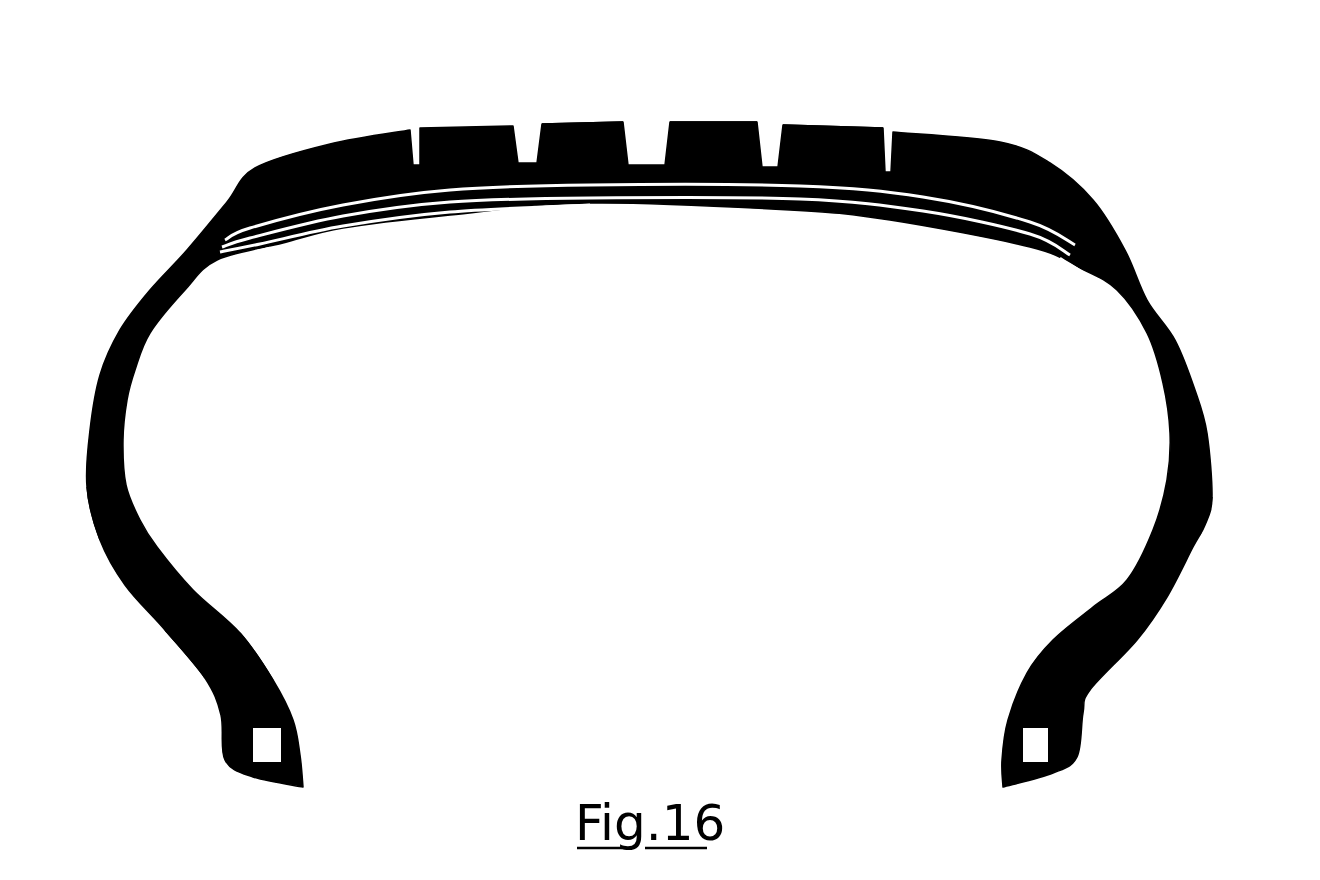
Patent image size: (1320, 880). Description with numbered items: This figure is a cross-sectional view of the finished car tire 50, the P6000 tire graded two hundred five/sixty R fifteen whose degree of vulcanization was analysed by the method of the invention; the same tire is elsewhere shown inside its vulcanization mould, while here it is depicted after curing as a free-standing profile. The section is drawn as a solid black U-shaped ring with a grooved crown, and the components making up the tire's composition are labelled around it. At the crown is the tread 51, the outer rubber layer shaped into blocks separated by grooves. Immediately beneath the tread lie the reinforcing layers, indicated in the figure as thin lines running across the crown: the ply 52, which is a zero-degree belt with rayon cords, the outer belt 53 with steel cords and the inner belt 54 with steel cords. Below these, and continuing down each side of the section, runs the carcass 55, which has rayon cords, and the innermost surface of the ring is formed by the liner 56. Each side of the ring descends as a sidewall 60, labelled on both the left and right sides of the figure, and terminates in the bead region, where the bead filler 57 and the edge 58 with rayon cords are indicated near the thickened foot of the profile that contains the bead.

The tire 50 is at (960, 141).
The tread 51 is at (738, 122).
The ply 52 is at (350, 200).
The outer belt 53 is at (450, 210).
The inner belt 54 is at (543, 207).
The carcass 55 is at (1090, 280).
The liner 56 is at (124, 433).
The bead filler 57 is at (250, 647).
The edge 58 is at (197, 677).
The sidewall 60 is at (93, 520).